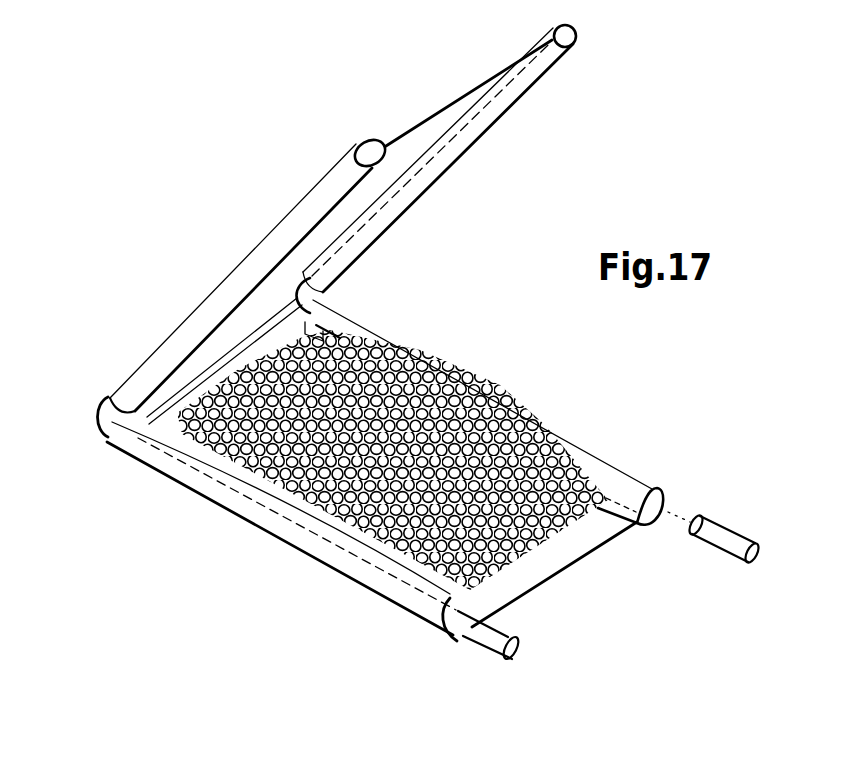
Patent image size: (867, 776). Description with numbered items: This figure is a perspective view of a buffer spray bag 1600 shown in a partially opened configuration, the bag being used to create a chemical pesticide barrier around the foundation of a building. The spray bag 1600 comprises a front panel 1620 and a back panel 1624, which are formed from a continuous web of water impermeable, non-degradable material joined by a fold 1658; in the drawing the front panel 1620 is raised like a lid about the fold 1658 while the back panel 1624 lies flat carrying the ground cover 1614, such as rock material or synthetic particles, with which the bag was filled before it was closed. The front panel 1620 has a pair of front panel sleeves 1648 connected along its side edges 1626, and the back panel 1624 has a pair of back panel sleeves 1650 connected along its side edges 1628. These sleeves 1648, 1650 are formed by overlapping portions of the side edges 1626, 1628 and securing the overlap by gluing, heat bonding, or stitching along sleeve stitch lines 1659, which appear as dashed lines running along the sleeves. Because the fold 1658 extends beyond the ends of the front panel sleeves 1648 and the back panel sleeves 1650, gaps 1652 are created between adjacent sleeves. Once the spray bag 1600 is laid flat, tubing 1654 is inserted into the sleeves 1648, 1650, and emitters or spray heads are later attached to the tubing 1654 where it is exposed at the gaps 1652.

The buffer spray bag 1600 is at (145, 172).
The ground cover 1614 is at (510, 393).
The front panel 1620 is at (430, 135).
The back panel 1624 is at (555, 552).
The side edges 1626 is at (190, 311).
The side edges 1628 is at (601, 450).
The front panel sleeves 1648 is at (540, 63).
The back panel sleeves 1650 is at (622, 483).
The gaps 1652 is at (330, 295).
The tubing 1654 is at (737, 542).
The fold 1658 is at (90, 408).
The sleeve stitch lines 1659 is at (457, 124).